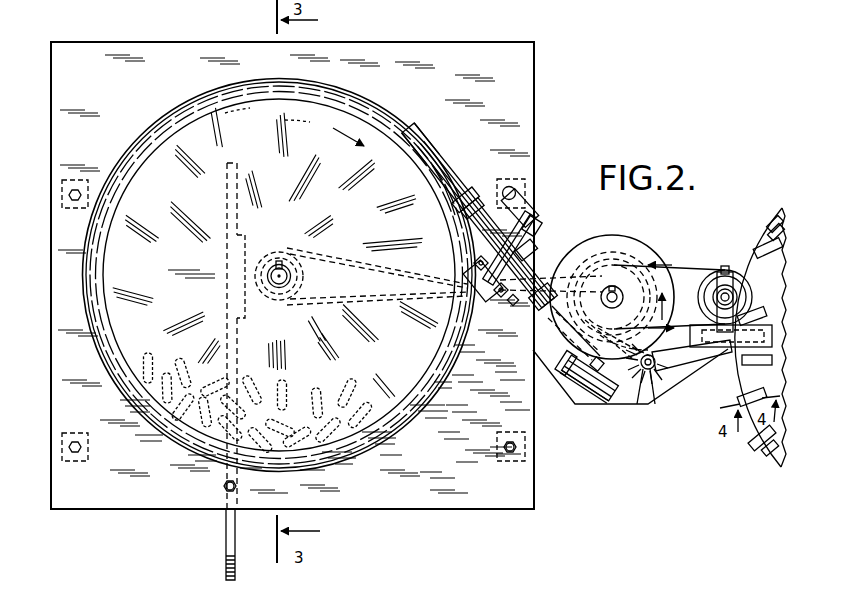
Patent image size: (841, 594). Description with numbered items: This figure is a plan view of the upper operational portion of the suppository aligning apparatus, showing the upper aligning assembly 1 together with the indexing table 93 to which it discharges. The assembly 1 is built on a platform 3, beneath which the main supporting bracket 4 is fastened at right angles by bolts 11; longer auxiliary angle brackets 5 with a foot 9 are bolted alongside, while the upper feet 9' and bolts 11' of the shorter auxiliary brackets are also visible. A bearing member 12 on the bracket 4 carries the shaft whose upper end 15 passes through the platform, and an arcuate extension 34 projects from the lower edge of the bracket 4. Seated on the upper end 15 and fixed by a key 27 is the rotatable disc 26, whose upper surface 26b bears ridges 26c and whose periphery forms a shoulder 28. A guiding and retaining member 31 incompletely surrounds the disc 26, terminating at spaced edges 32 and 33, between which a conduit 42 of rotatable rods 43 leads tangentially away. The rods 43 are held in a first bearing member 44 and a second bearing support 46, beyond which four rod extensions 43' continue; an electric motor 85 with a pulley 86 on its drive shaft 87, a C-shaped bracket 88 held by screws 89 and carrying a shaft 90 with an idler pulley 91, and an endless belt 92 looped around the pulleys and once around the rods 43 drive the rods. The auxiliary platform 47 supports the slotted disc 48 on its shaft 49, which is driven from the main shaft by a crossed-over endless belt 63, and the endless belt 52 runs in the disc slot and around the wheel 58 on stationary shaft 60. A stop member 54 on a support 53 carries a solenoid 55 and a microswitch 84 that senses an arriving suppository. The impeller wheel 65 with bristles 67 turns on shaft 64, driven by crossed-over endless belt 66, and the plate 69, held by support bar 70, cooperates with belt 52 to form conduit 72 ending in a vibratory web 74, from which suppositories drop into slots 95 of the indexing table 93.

The upper aligning assembly 1 is at (112, 528).
The platform 3 is at (389, 48).
The main supporting bracket 4 is at (227, 254).
The auxiliary angle brackets 5 is at (178, 362).
The foot 9 is at (483, 327).
The upper feet of shorter auxiliary brackets 9' is at (57, 330).
The bolts 11 is at (370, 325).
The bolts for shorter auxiliary brackets 11' is at (51, 324).
The bearing member 12 is at (250, 258).
The upper end of shaft 15 is at (291, 276).
The rotatable disc 26 is at (196, 147).
The upper surface of disc 26b is at (235, 117).
The ridges 26c is at (290, 120).
The key 27 is at (280, 261).
The shoulder 28 is at (396, 136).
The guiding and retaining member 31 is at (440, 386).
The terminal edge of guide member 32 is at (434, 153).
The terminal edge of guide member 33 is at (453, 228).
The arcuate extension 34 is at (226, 538).
The conduit 42 is at (447, 176).
The rotatable rods 43 is at (468, 194).
The rod extensions 43' is at (565, 333).
The first bearing member 44 is at (453, 213).
The second bearing support 46 is at (546, 290).
The auxiliary platform 47 is at (600, 405).
The disc with peripheral slot 48 is at (612, 237).
The shaft 49 is at (603, 298).
The endless belt 52 is at (680, 265).
The support 53 is at (588, 400).
The stop member 54 is at (600, 386).
The solenoid 55 is at (568, 376).
The wheel 58 is at (716, 275).
The stationary shaft 60 is at (714, 297).
The crossed-over endless belt 63 is at (571, 320).
The shaft 64 is at (652, 375).
The impeller wheel 65 is at (642, 369).
The crossed-over endless belt 66 is at (678, 306).
The bristles or tufts 67 is at (639, 395).
The plate 69 is at (720, 348).
The support bar 70 is at (694, 358).
The conduit 72 is at (756, 319).
The vibratory web 74 is at (727, 266).
The microswitch 84 is at (592, 364).
The electric motor 85 is at (536, 212).
The pulley 86 is at (539, 232).
The drive shaft 87 is at (536, 221).
The C-shaped bracket 88 is at (478, 288).
The screws 89 is at (513, 305).
The shaft 90 is at (500, 296).
The idler pulley 91 is at (470, 276).
The endless belt 92 is at (533, 248).
The indexing table 93 is at (753, 245).
The slots 95 is at (772, 230).